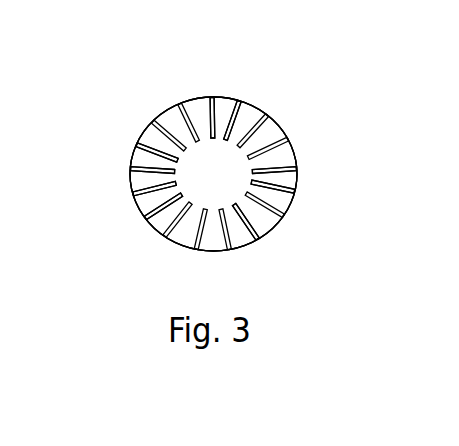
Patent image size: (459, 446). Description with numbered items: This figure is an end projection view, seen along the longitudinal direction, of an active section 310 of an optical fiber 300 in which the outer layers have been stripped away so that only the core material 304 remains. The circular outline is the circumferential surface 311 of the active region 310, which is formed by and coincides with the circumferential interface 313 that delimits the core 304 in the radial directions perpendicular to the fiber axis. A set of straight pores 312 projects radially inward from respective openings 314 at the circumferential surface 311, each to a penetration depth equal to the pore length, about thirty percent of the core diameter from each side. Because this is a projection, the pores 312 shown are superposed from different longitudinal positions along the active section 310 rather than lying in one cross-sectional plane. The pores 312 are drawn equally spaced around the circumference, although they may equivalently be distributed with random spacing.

The optical fiber 300 is at (309, 123).
The core material 304 is at (215, 172).
The active section 310 is at (270, 175).
The circumferential surface 311 is at (160, 133).
The pores 312 is at (221, 97).
The circumferential interface 313 is at (175, 106).
The openings 314 is at (213, 117).